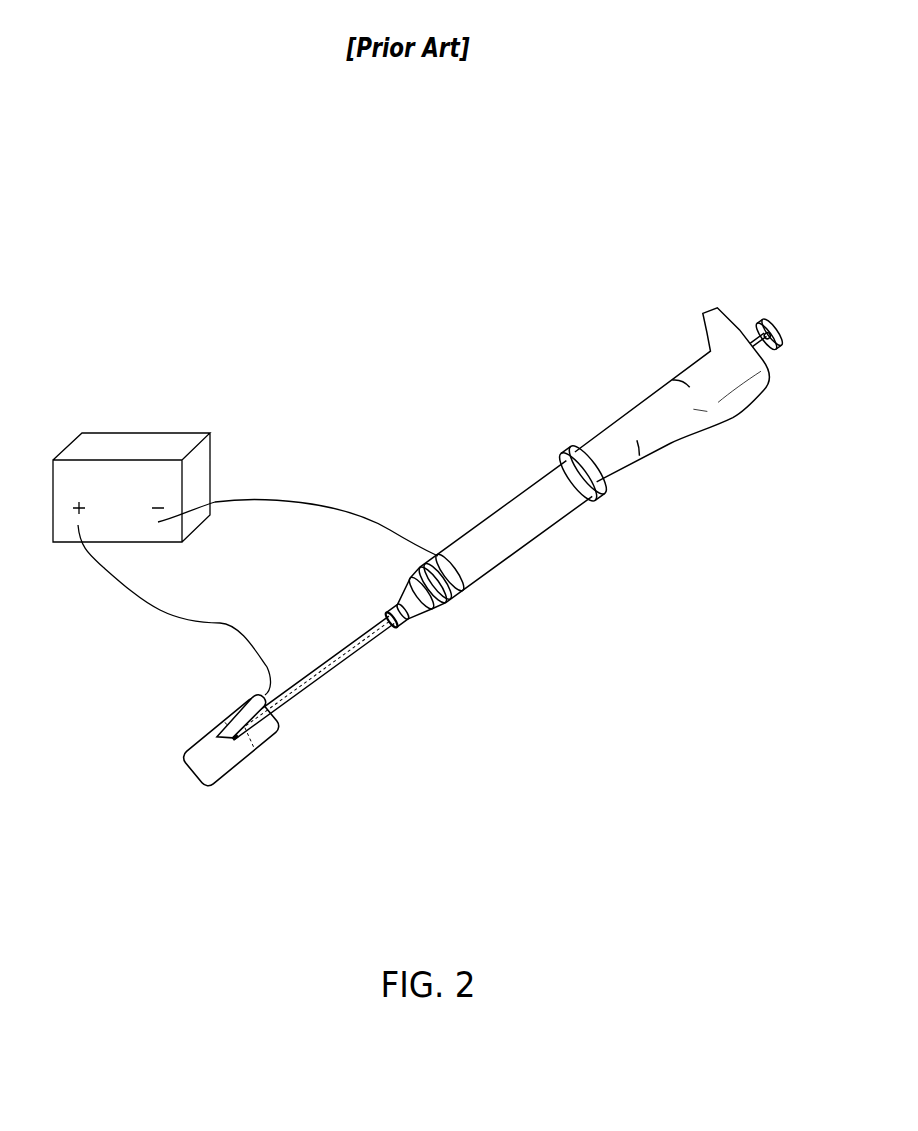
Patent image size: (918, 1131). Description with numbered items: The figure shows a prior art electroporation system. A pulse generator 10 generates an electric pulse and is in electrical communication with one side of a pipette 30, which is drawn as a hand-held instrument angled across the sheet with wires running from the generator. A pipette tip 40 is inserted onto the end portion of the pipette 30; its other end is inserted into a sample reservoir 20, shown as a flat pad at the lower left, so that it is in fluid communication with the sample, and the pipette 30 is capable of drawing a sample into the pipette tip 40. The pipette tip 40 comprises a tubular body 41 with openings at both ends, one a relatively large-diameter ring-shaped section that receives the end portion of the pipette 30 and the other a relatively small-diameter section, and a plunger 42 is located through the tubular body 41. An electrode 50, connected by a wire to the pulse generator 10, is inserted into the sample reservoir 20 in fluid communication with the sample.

The pulse generator 10 is at (148, 438).
The sample reservoir 20 is at (308, 822).
The pipette 30 is at (513, 512).
The pipette tip 40 is at (388, 755).
The tubular body 41 is at (410, 692).
The plunger 42 is at (360, 727).
The electrode 50 is at (247, 695).